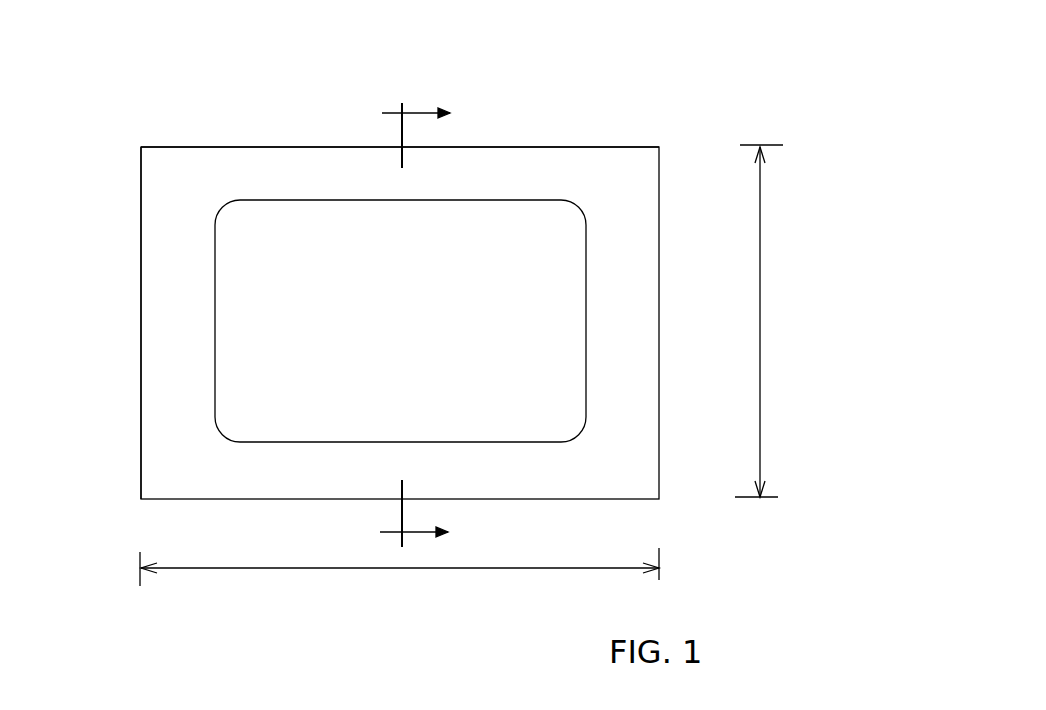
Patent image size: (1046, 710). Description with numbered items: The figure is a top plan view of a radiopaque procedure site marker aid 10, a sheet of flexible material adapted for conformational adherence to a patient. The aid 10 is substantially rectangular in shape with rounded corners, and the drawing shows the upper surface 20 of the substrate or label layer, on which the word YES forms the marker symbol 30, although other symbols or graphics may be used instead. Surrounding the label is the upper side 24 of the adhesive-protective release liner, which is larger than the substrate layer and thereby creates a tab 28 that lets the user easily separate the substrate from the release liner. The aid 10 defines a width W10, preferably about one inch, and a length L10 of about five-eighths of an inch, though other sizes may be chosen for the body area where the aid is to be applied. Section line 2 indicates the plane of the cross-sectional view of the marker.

The radiopaque procedure site marker aid 10 is at (627, 88).
The tab 28 is at (251, 160).
The upper side of release liner 24 is at (167, 203).
The upper surface of substrate layer 20 is at (496, 430).
The marker symbol 30 is at (277, 342).
The section line 2- 2 is at (412, 324).
The length of the aid L10 is at (768, 374).
The width of the aid W10 is at (305, 576).